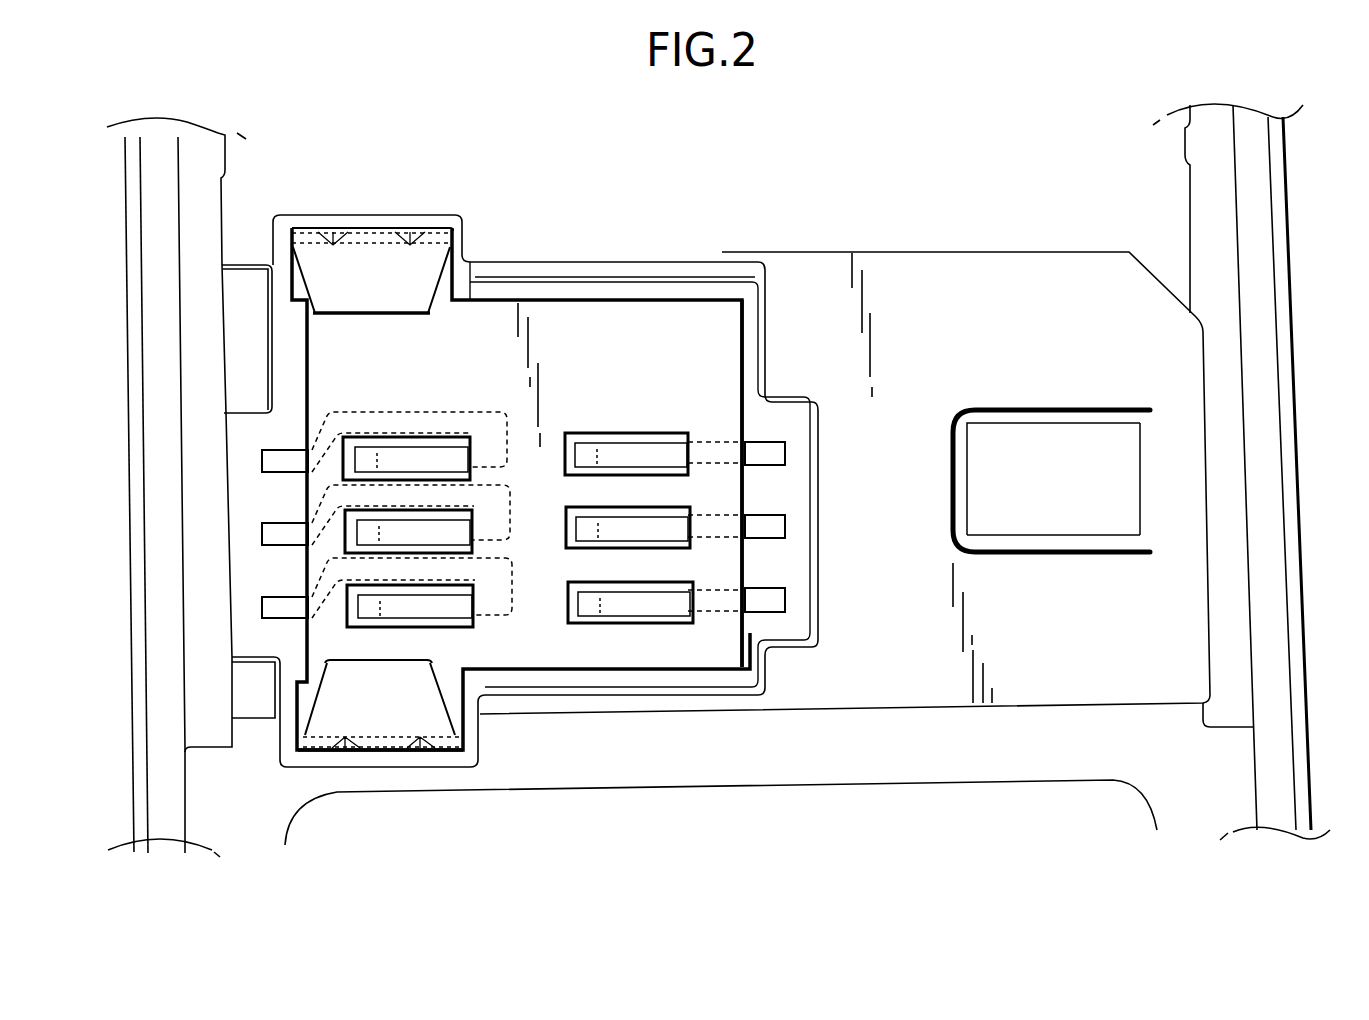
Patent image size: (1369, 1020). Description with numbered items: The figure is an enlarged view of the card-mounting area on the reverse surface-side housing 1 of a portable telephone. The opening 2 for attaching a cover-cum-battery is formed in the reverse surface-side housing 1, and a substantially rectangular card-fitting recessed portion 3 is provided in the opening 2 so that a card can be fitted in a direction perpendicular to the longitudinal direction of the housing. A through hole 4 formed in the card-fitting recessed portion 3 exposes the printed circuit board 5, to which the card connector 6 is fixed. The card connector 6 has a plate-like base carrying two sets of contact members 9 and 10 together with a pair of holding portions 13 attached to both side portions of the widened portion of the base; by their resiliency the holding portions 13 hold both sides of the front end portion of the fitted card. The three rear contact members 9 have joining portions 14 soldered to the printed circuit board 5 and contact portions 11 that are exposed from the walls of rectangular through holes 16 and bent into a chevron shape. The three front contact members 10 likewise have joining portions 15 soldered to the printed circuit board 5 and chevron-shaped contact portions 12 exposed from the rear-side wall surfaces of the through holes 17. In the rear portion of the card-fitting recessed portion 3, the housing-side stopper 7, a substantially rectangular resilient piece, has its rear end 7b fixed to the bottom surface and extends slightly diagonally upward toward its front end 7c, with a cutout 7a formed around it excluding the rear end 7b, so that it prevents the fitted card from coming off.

The reverse surface-side housing 1 is at (1300, 231).
The opening 2 is at (1167, 272).
The card-fitting recessed portion 3 is at (530, 268).
The through hole 4 is at (717, 267).
The printed circuit board 5 is at (658, 292).
The card connector 6 is at (597, 327).
The housing-side stopper 7 is at (1045, 492).
The cutout 7a is at (1148, 543).
The rear end 7b is at (1142, 485).
The front end 7c is at (967, 497).
The contact members 9 is at (800, 445).
The contact members 10 is at (270, 432).
The contact portions 11 is at (622, 598).
The contact portions 12 is at (405, 603).
The holding portions 13 is at (382, 263).
The joining portions 14 is at (770, 600).
The joining portions 15 is at (298, 603).
The through hole 16 is at (573, 617).
The through hole 17 is at (445, 622).